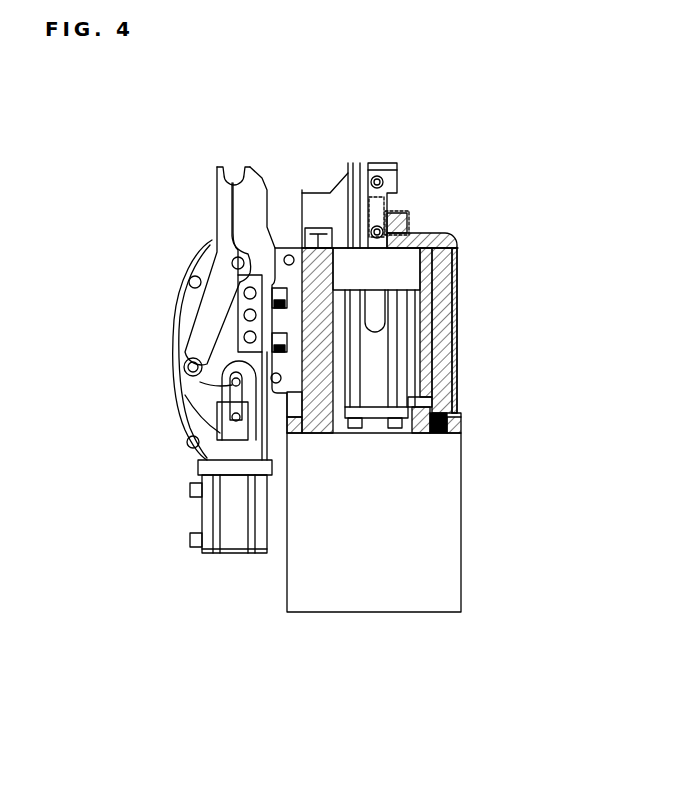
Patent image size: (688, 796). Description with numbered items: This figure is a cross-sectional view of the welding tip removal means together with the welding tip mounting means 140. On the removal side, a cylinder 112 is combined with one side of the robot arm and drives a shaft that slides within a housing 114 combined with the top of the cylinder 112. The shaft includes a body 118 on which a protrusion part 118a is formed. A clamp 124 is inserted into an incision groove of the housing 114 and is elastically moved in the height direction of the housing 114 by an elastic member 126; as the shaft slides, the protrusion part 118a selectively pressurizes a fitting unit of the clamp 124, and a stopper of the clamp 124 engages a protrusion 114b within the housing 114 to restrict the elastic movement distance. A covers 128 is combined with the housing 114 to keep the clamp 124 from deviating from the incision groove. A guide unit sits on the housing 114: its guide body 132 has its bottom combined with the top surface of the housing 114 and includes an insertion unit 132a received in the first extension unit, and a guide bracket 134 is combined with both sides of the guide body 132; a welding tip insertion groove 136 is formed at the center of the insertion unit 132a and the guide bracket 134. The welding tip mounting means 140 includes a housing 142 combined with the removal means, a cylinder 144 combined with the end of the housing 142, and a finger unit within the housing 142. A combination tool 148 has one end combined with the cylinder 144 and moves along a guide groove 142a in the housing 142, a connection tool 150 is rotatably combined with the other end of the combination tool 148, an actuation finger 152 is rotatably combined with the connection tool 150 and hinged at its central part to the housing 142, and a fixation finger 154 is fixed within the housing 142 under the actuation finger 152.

The cylinder 112 is at (375, 590).
The housing 114 is at (313, 445).
The protrusion 114b is at (428, 297).
The body 118 is at (373, 385).
The protrusion part 118a is at (415, 440).
The clamp 124 is at (442, 392).
The elastic member 126 is at (458, 415).
The covers 128 is at (455, 340).
The guide body 132 is at (303, 198).
The insertion unit 132a is at (460, 266).
The guide bracket 134 is at (378, 165).
The welding tip insertion groove 136 is at (378, 200).
The welding tip mounting means 140 is at (146, 303).
The housing 142 is at (193, 279).
The guide groove 142a is at (182, 400).
The cylinder 144 is at (230, 556).
The combination tool 148 is at (188, 428).
The connection tool 150 is at (200, 382).
The actuation finger 152 is at (220, 165).
The fixation finger 154 is at (242, 165).